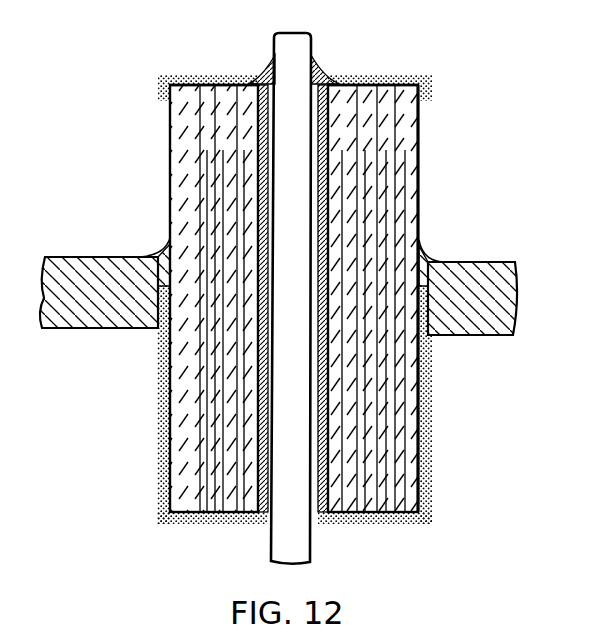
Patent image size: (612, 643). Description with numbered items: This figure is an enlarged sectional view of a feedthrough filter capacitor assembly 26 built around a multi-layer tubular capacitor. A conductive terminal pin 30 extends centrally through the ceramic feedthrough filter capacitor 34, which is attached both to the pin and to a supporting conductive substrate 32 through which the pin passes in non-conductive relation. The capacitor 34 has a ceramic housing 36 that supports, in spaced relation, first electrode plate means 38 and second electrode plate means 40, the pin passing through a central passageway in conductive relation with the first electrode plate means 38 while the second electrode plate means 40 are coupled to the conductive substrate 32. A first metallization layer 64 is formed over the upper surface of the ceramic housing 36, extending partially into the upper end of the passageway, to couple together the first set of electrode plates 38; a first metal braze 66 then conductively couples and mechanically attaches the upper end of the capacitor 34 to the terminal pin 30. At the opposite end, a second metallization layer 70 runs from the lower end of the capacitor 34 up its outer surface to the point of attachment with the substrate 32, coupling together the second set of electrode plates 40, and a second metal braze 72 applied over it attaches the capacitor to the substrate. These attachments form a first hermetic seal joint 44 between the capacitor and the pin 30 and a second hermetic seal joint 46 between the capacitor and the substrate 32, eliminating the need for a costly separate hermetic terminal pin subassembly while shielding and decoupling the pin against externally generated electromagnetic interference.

The feedthrough filter capacitor assembly 26 is at (462, 140).
The conductive terminal pin 30 is at (297, 32).
The conductive substrate 32 is at (472, 337).
The ceramic feedthrough filter capacitor 34 is at (150, 124).
The ceramic housing 36 is at (421, 196).
The first electrode plate means 38 is at (393, 85).
The second electrode plate means 40 is at (387, 500).
The first hermetic seal joint 44 is at (252, 60).
The second hermetic seal joint 46 is at (140, 243).
The first metallization layer 64 is at (262, 117).
The first metal braze 66 is at (267, 58).
The second metallization layer 70 is at (425, 405).
The second metal braze 72 is at (165, 247).